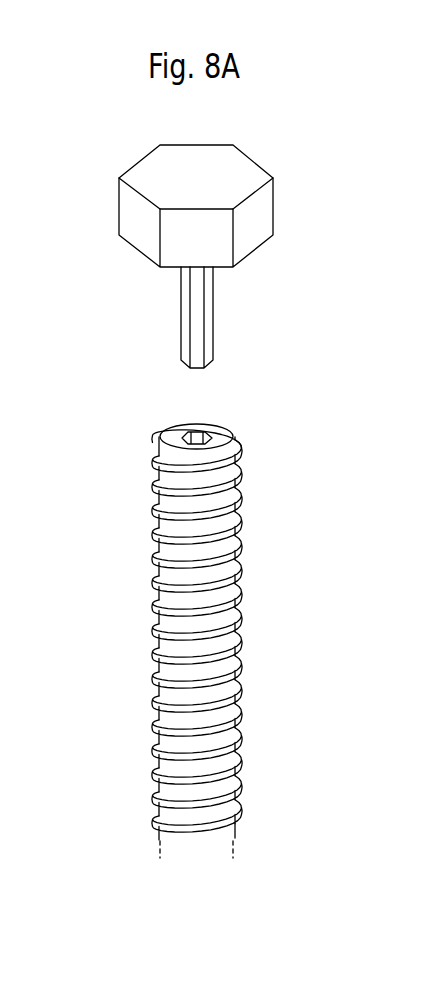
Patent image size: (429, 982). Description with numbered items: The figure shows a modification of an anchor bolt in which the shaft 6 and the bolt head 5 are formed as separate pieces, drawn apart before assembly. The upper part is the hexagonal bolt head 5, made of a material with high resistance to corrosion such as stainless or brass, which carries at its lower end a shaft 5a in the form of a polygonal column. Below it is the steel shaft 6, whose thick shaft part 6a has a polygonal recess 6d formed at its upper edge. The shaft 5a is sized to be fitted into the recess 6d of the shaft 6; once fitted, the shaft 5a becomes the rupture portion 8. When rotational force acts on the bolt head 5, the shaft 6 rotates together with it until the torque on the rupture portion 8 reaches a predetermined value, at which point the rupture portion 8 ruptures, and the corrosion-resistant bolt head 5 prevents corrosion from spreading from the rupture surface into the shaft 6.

The bolt head 5 is at (238, 163).
The shaft 5a is at (276, 317).
The rupture portion 8 is at (197, 317).
The shaft 6 is at (255, 641).
The thick shaft part 6a is at (218, 625).
The polygonal recess 6d is at (193, 431).